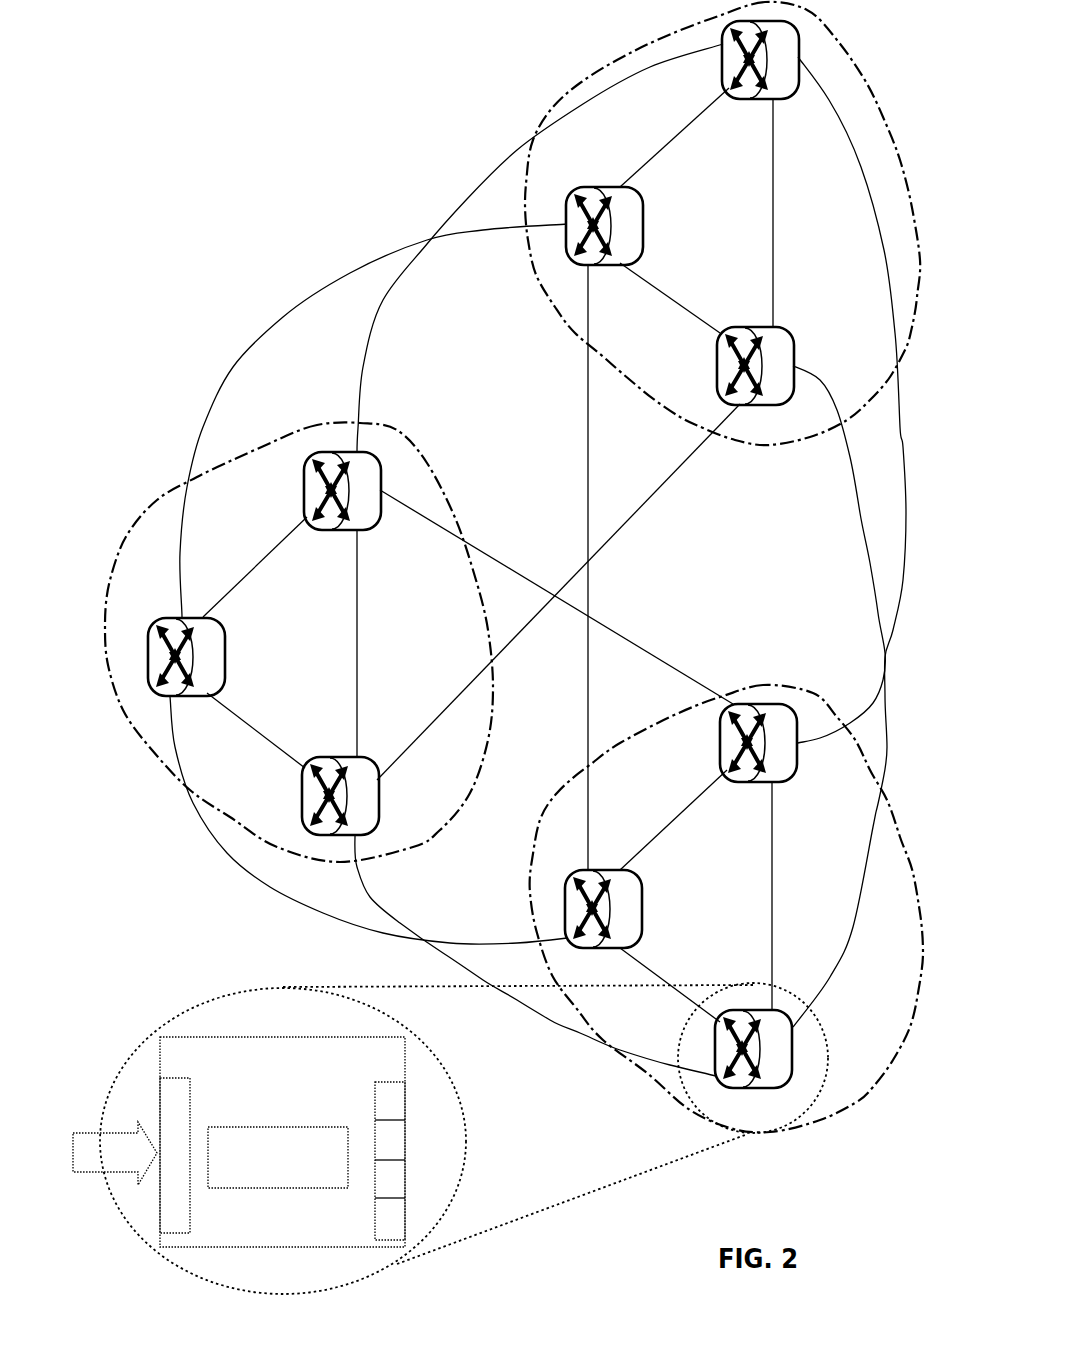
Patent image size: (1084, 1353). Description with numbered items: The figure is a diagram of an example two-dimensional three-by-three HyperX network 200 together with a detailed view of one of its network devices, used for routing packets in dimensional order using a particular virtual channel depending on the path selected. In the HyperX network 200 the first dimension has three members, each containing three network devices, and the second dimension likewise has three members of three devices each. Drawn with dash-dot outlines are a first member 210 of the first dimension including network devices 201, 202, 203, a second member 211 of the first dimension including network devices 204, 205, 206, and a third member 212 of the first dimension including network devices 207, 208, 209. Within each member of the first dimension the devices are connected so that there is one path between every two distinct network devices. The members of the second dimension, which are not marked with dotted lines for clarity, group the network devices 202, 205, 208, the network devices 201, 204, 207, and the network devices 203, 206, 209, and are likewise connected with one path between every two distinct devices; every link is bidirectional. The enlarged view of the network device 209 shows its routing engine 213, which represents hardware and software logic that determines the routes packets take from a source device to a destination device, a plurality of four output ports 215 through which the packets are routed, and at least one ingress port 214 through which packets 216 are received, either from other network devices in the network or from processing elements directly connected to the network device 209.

The HyperX network 200 is at (320, 62).
The network device 201 is at (791, 86).
The network device 202 is at (638, 217).
The network device 203 is at (825, 316).
The network device 204 is at (375, 520).
The network device 205 is at (225, 650).
The network device 206 is at (405, 740).
The network device 207 is at (787, 782).
The network device 208 is at (699, 908).
The network device 209 is at (793, 1049).
The first member of the first dimension 210 is at (563, 95).
The second member of the first dimension 211 is at (170, 492).
The third member of the first dimension 212 is at (780, 688).
The routing engine 213 is at (343, 1185).
The ingress port 214 is at (235, 1091).
The output ports 215 is at (375, 1093).
The packets 216 is at (124, 1130).